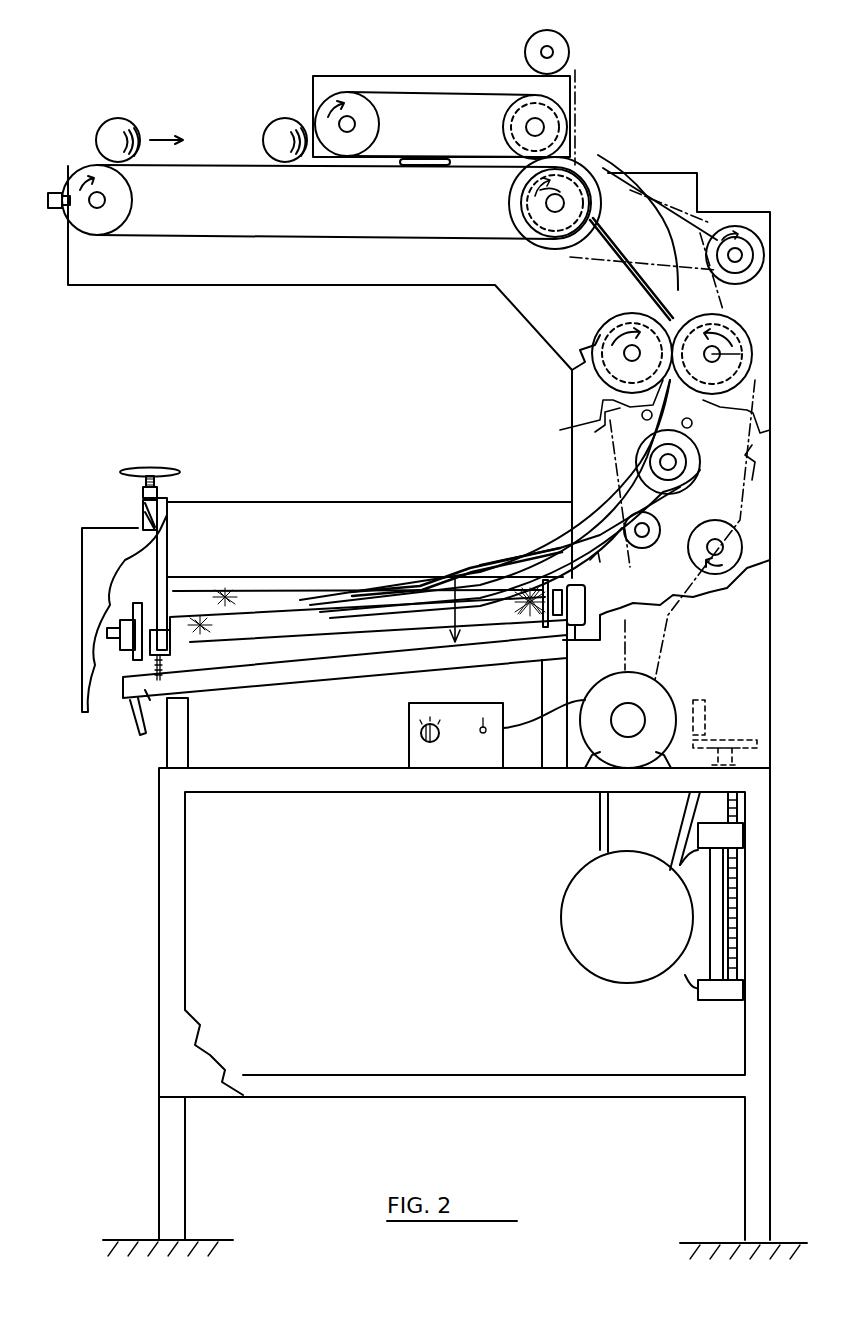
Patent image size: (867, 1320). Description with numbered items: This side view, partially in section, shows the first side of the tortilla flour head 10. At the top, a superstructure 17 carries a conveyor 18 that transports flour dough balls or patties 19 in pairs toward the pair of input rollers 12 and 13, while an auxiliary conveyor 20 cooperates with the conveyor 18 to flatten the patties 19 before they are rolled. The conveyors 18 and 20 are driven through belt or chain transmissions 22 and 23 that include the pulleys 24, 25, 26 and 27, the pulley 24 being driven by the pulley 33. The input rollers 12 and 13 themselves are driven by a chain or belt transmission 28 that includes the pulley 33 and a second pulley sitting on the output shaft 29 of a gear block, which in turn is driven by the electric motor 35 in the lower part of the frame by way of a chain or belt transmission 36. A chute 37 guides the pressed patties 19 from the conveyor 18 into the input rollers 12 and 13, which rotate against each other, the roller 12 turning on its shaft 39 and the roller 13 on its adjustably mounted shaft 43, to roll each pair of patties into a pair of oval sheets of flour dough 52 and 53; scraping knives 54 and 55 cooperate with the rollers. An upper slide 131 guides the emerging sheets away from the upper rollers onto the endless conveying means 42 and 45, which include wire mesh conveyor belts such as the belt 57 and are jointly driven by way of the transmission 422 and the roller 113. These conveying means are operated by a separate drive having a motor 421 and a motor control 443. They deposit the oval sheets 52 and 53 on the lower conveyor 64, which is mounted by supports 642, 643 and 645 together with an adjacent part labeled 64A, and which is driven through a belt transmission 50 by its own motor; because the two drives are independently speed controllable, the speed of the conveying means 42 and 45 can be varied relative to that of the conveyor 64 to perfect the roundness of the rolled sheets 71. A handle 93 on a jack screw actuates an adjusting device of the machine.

The tortilla flour head 10 is at (465, 463).
The input roller 12 is at (602, 350).
The input roller 13 is at (752, 335).
The superstructure 17 is at (168, 266).
The conveyor 18 is at (326, 188).
The flour dough patties 19 is at (122, 122).
The auxiliary conveyor 20 is at (392, 110).
The belt or chain transmission 22 is at (700, 192).
The belt or chain transmission 23 is at (577, 66).
The pulley 24 is at (765, 256).
The pulley 25 is at (535, 247).
The pulley 26 is at (505, 112).
The pulley 27 is at (580, 42).
The chain or belt transmission 28 is at (755, 455).
The output shaft 29 is at (737, 535).
The pulley 33 is at (775, 222).
The electric motor 35 is at (597, 895).
The chain or belt transmission 36 is at (600, 818).
The chute 37 is at (590, 262).
The shaft 39 is at (575, 375).
The endless conveying means 42 is at (625, 505).
The shaft 43 is at (742, 355).
The endless conveying means 45 is at (611, 482).
The belt transmission 50 is at (145, 718).
The oval sheet of flour dough 52 is at (698, 490).
The oval sheet of flour dough 53 is at (472, 551).
The scraping knife 54 is at (595, 432).
The scraping knife 55 is at (752, 420).
The endless wire mesh conveyor belt 57 is at (526, 539).
The conveyor 64 is at (225, 590).
The brush bracket 64A is at (587, 597).
The rolled sheet 71 is at (455, 602).
The handle 93 is at (140, 466).
The roller 113 is at (692, 428).
The upper slide 131 is at (646, 422).
The motor 421 is at (655, 695).
The transmission 422 is at (668, 632).
The motor control 443 is at (410, 724).
The support 642 is at (186, 600).
The support 643 is at (155, 572).
The support 645 is at (307, 677).